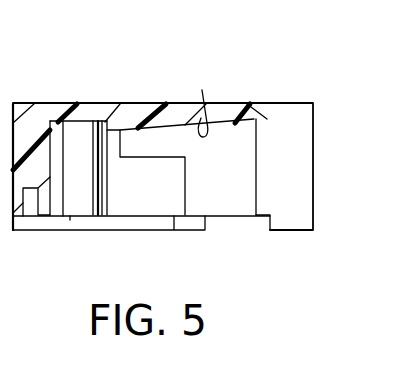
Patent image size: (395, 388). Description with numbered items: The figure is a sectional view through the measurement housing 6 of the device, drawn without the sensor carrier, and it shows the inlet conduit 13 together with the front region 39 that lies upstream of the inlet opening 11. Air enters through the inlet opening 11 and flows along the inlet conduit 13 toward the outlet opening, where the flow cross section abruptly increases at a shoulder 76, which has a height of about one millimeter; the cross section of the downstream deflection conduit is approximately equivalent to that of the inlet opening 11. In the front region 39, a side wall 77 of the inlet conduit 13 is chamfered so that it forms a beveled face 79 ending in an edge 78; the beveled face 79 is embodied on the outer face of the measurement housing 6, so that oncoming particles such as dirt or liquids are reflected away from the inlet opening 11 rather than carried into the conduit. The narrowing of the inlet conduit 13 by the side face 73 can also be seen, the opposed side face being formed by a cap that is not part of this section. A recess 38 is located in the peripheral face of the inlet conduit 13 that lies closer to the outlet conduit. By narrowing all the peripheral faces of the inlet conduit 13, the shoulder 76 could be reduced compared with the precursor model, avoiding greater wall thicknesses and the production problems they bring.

The measurement housing 6 is at (90, 231).
The inlet opening 11 is at (256, 166).
The inlet conduit 13 is at (230, 200).
The recess 38 is at (152, 190).
The front region 39 is at (297, 215).
The side face 73 is at (204, 98).
The shoulder 76 is at (105, 121).
The side wall 77 is at (147, 112).
The edge 78 is at (254, 119).
The beveled face 79 is at (258, 105).